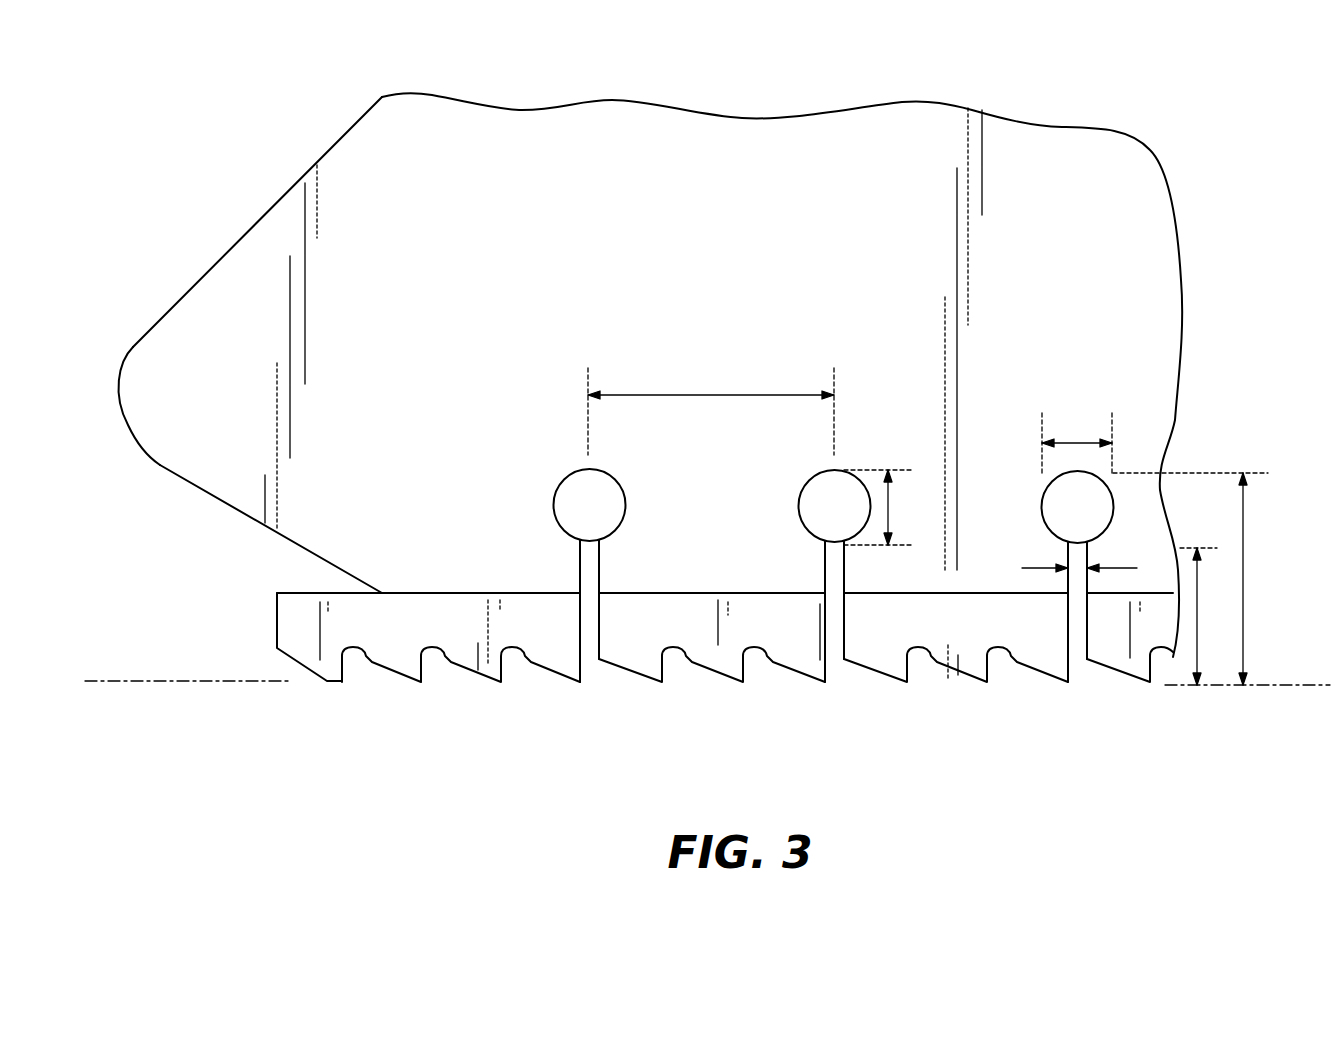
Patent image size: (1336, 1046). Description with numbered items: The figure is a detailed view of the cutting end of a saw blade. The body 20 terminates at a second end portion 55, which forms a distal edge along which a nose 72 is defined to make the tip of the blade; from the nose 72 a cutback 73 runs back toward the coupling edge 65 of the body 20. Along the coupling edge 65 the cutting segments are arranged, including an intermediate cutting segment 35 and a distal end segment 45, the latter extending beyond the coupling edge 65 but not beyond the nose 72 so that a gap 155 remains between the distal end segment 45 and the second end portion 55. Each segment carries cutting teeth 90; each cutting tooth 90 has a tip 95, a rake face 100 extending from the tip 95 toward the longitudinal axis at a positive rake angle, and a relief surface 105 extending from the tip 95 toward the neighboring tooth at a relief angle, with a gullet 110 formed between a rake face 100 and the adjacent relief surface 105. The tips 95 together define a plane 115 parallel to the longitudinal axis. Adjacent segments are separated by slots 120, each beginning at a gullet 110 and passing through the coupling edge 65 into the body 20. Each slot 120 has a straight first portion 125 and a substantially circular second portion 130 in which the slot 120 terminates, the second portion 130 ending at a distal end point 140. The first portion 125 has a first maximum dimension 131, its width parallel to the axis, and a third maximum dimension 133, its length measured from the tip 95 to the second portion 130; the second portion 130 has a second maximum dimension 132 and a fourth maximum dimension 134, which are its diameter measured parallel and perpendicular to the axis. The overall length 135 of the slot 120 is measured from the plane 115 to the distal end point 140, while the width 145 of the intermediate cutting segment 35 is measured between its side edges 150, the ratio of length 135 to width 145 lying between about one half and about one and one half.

The body 20 is at (638, 133).
The second end portion 55 is at (195, 295).
The nose 72 is at (122, 398).
The cutback 73 is at (160, 468).
The coupling edge 65 is at (400, 592).
The gap 155 is at (268, 568).
The distal end segment 45 is at (315, 668).
The cutting tooth 90 is at (337, 698).
The second portion 130 is at (557, 504).
The distal end point 140 is at (835, 470).
The first portion 125 is at (582, 578).
The slot 120 is at (589, 692).
The side edge 150 is at (600, 568).
The intermediate cutting segment 35 is at (700, 752).
The gullet 110 is at (920, 655).
The relief surface 105 is at (950, 672).
The tip 95 is at (980, 686).
The rake face 100 is at (990, 672).
The width 145 is at (698, 392).
The fourth maximum dimension 134 is at (890, 510).
The second maximum dimension 132 is at (1068, 443).
The first maximum dimension 131 is at (1052, 547).
The length 135 is at (1246, 560).
The third maximum dimension 133 is at (1200, 575).
The plane 115 is at (1265, 684).